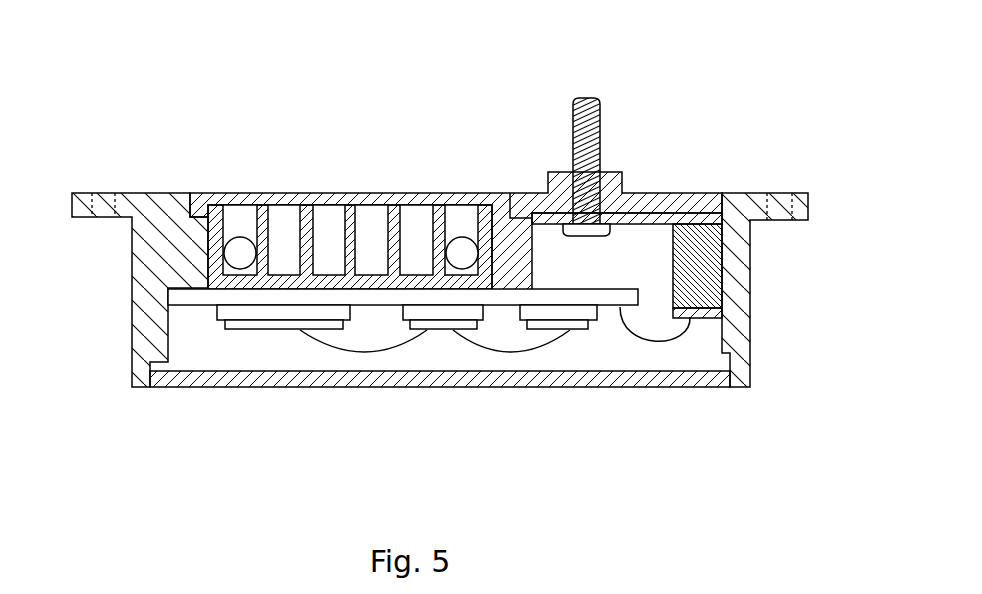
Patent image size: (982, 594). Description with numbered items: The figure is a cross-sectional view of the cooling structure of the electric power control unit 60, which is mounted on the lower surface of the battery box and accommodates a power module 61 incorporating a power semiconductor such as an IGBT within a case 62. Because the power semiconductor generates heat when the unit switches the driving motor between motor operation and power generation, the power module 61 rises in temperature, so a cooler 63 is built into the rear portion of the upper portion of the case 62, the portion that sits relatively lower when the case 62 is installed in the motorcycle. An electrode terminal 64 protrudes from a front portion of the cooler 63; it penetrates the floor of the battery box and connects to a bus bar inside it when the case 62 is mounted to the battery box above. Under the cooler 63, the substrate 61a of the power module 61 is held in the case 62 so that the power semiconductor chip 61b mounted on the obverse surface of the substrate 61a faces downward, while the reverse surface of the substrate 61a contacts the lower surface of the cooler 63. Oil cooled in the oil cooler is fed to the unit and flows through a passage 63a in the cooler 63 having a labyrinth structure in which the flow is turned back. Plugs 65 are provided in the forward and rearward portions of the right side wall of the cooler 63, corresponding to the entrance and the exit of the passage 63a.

The electric power control unit 60 is at (172, 108).
The power module 61 is at (607, 312).
The substrate 61a is at (367, 306).
The power semiconductor chip 61b is at (263, 330).
The case 62 is at (156, 178).
The cooler 63 is at (350, 182).
The passage 63a is at (325, 210).
The electrode terminal 64 is at (602, 120).
The plug 65 is at (243, 237).